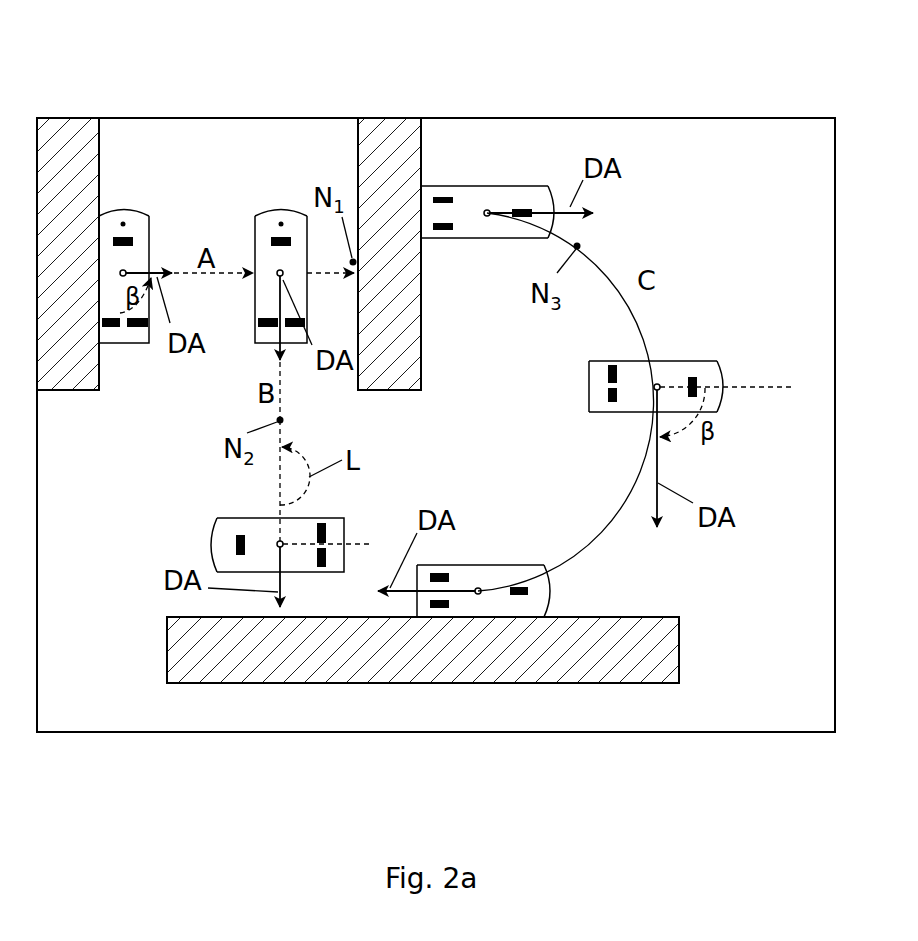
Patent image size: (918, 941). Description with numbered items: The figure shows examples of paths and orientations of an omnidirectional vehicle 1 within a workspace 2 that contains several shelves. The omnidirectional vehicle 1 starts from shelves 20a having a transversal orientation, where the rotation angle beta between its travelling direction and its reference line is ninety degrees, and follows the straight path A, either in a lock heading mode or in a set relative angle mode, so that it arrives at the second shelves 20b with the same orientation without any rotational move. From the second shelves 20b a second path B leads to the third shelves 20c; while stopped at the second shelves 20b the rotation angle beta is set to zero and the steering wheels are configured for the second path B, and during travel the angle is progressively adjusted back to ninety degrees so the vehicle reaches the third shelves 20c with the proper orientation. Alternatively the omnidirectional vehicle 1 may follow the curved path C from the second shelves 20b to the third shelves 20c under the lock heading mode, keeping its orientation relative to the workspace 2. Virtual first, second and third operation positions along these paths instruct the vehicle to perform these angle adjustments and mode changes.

The omnidirectional vehicle 1 is at (137, 197).
The workspace 2 is at (773, 118).
The shelves 20a is at (67, 130).
The second shelves 20b is at (388, 130).
The third shelves 20c is at (655, 673).